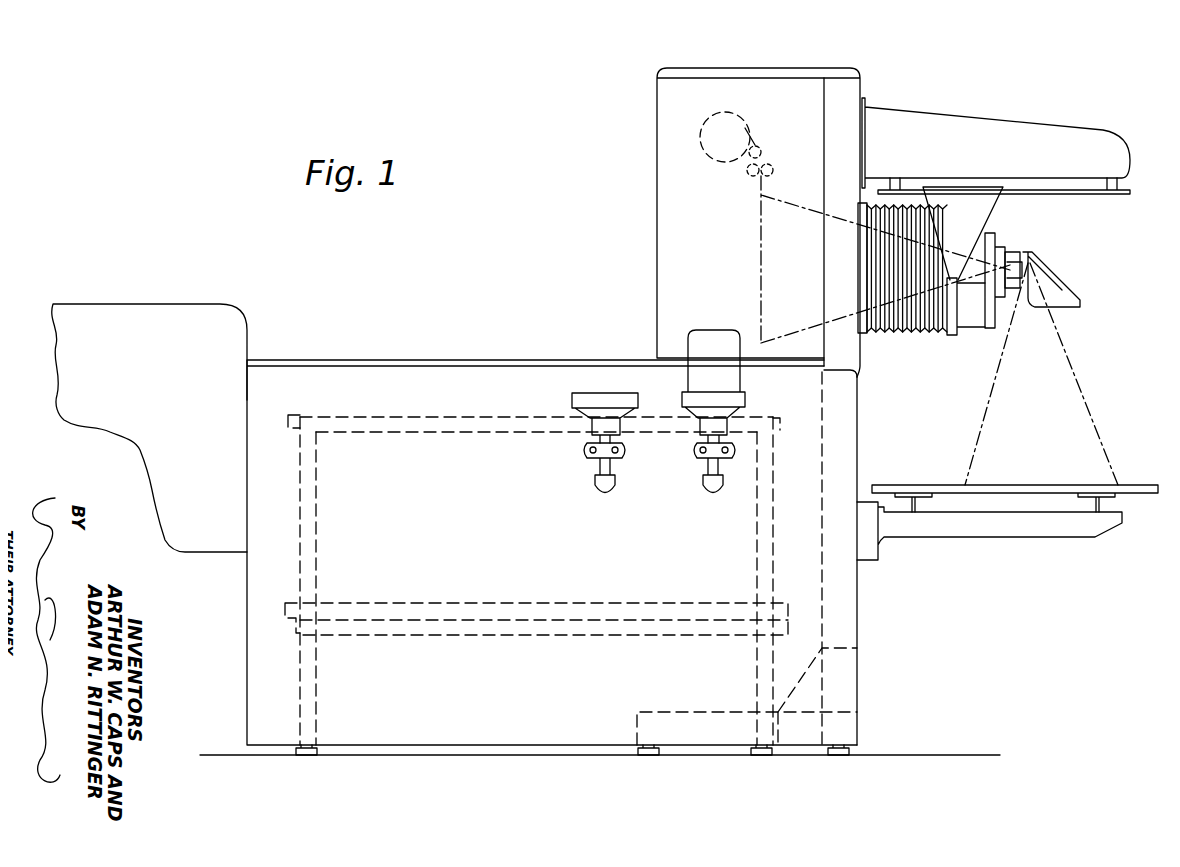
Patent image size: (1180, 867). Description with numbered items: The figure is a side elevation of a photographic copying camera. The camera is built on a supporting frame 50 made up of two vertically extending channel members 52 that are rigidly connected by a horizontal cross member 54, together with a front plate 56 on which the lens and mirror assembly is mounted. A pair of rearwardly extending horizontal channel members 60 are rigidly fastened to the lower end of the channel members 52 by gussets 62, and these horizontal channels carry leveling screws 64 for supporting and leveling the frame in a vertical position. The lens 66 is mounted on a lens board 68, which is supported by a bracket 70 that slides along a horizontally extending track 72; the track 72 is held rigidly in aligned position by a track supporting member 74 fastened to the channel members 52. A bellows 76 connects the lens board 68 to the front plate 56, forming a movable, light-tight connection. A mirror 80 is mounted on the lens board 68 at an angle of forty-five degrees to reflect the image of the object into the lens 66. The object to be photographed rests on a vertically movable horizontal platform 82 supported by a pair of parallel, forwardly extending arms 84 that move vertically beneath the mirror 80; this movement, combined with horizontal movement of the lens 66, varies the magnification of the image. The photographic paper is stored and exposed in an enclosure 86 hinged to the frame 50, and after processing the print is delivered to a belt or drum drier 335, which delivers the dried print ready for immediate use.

The drier 335 is at (220, 327).
The supporting frame 50 is at (857, 583).
The vertically extending channel members 52 is at (847, 622).
The horizontal cross member 54 is at (848, 68).
The front plate 56 is at (860, 353).
The horizontal channel members 60 is at (703, 723).
The gussets 62 is at (803, 690).
The leveling screws 64 is at (820, 777).
The lens 66 is at (1018, 302).
The lens board 68 is at (993, 240).
The bracket 70 is at (978, 207).
The track 72 is at (1093, 197).
The track supporting member 74 is at (1040, 142).
The bellows 76 is at (920, 330).
The mirror 80 is at (1062, 282).
The platform 82 is at (1032, 485).
The arms 84 is at (1047, 530).
The enclosure 86 is at (704, 92).